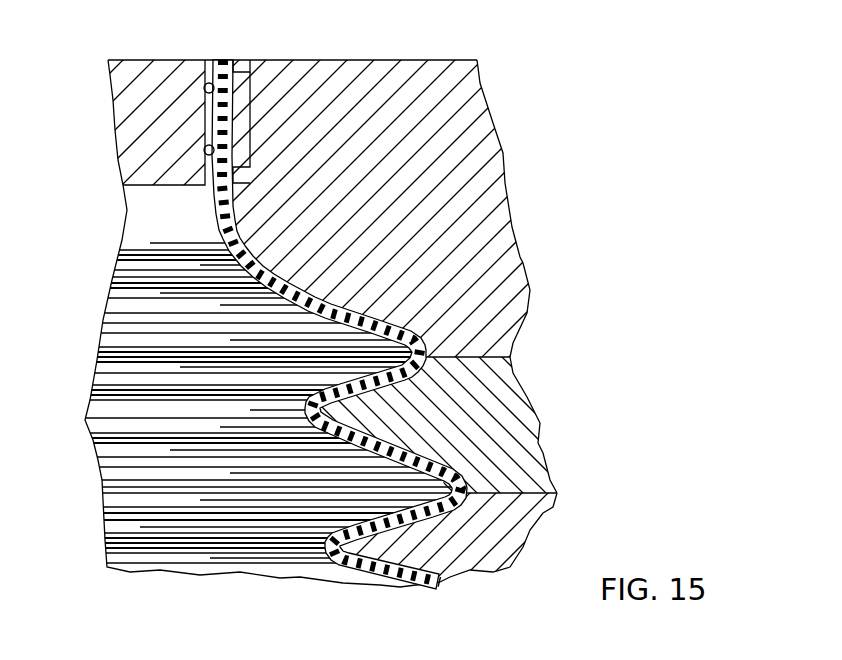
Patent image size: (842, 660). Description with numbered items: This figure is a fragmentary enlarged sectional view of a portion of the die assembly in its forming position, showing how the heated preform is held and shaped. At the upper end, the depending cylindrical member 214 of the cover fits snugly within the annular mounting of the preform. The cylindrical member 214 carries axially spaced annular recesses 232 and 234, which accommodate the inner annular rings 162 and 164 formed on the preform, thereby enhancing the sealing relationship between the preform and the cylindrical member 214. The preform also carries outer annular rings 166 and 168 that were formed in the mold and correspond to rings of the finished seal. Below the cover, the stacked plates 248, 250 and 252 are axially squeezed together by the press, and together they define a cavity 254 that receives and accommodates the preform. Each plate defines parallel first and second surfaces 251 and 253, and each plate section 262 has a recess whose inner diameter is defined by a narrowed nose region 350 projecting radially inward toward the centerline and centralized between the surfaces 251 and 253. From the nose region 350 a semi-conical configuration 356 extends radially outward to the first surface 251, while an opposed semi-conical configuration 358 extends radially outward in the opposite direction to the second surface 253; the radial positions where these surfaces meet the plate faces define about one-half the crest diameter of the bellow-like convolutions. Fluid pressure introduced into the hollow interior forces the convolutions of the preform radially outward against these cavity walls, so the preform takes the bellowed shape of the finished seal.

The inner annular ring 162 is at (203, 86).
The inner annular ring 164 is at (203, 147).
The outer annular ring 166 is at (250, 67).
The outer annular ring 168 is at (253, 173).
The cylindrical member 214 is at (127, 147).
The annular recess 232 is at (228, 62).
The annular recess 234 is at (205, 193).
The plate 248 is at (500, 557).
The plate 250 is at (513, 437).
The first surface 251 is at (485, 347).
The plate 252 is at (490, 208).
The second surface 253 is at (470, 368).
The cavity 254 is at (450, 293).
The plate section 262 is at (482, 140).
The nose region 350 is at (327, 420).
The semi-conical configuration 356 is at (413, 373).
The semi-conical configuration 358 is at (450, 470).